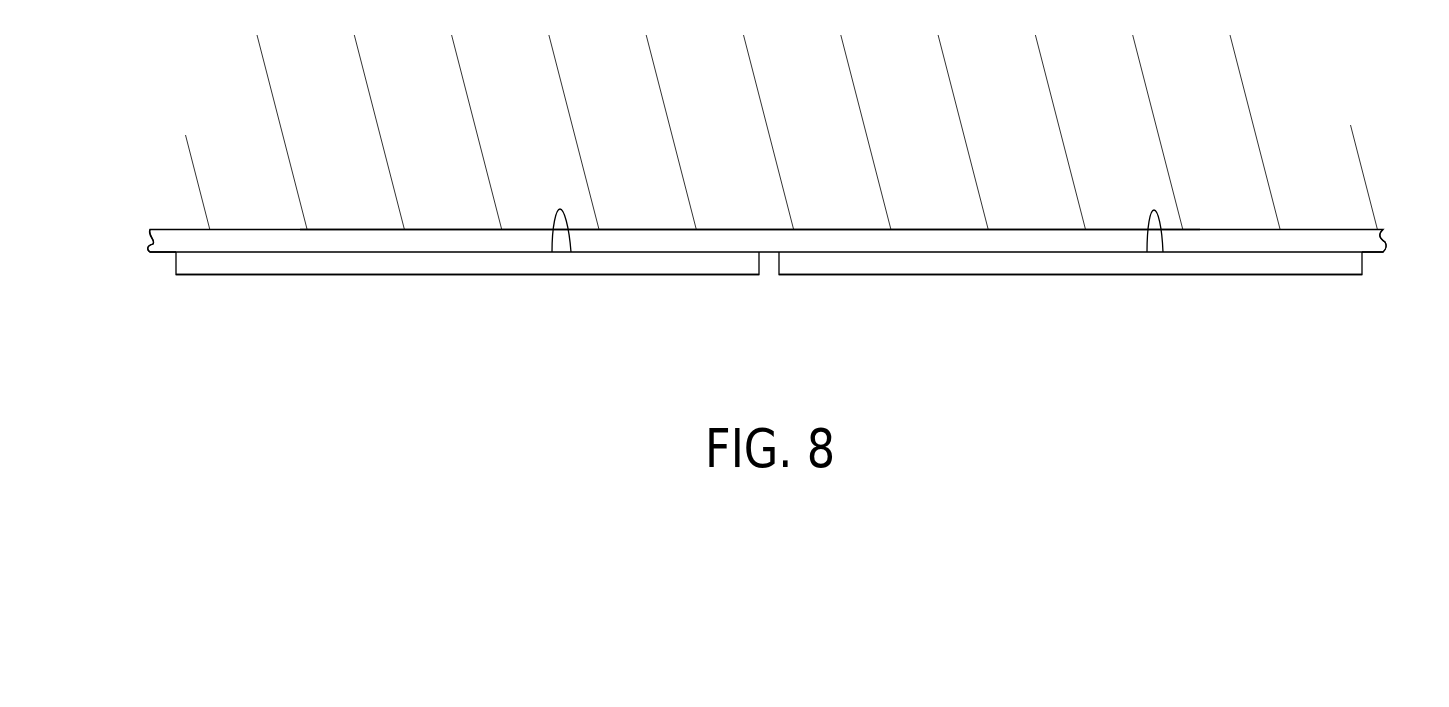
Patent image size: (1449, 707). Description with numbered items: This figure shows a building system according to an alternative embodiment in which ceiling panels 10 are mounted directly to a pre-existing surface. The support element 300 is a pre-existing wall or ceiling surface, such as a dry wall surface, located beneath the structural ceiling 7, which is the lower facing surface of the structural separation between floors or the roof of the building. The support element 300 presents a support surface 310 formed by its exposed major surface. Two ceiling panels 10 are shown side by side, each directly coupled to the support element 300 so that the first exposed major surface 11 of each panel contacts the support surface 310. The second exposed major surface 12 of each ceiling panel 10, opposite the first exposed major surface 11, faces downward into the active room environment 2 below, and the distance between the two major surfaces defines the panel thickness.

The active room environment 2 is at (1372, 398).
The structural ceiling 7 is at (1047, 231).
The ceiling panel 10 is at (417, 277).
The first exposed major surface 11 is at (571, 252).
The second exposed major surface 12 is at (668, 275).
The support element 300 is at (142, 238).
The support surface 310 is at (171, 254).